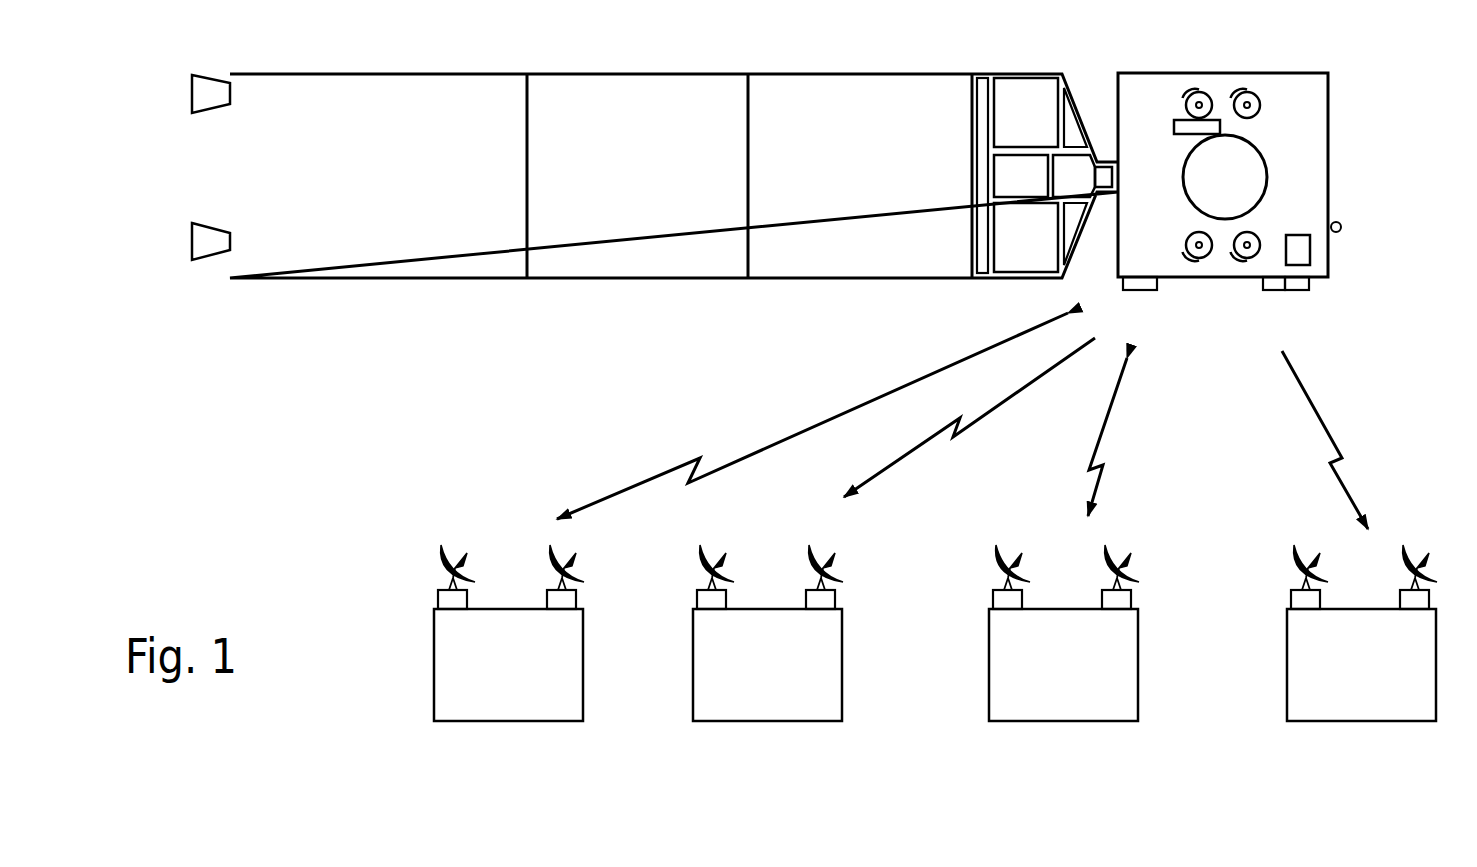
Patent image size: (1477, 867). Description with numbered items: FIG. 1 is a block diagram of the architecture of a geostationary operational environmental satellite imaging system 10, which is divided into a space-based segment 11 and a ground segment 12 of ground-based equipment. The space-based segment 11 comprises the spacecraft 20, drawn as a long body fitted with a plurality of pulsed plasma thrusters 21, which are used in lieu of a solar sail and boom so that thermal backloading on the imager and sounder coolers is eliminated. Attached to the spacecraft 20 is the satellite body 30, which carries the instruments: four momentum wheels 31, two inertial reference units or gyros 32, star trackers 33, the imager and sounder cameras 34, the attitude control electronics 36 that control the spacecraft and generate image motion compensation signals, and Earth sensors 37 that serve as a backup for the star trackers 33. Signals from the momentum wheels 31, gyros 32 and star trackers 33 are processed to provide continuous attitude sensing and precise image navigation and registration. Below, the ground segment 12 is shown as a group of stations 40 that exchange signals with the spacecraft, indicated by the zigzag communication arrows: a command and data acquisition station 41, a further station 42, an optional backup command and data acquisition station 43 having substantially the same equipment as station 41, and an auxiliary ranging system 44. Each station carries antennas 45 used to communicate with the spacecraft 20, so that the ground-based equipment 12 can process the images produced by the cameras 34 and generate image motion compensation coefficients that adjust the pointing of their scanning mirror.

The GOES imaging system 10 is at (289, 505).
The space-based segment 11 is at (1402, 65).
The ground segment 12 is at (188, 724).
The spacecraft 20 is at (674, 195).
The pulsed plasma thrusters 21 is at (200, 262).
The spacecraft 30 is at (1328, 77).
The momentum wheels 31 is at (1255, 90).
The inertial reference units 32 is at (1166, 120).
The star trackers 33 is at (1342, 228).
The imager and sounder 34 is at (1274, 290).
The attitude control electronics 36 is at (1310, 258).
The Earth sensors 37 is at (1143, 290).
The ground station network 40 is at (370, 697).
The command and data acquisition station 41 is at (488, 722).
The ground station 42 is at (763, 722).
The backup command and data acquisition station 43 is at (1066, 722).
The auxiliary ranging system 44 is at (1359, 722).
The antennas 45 is at (440, 565).